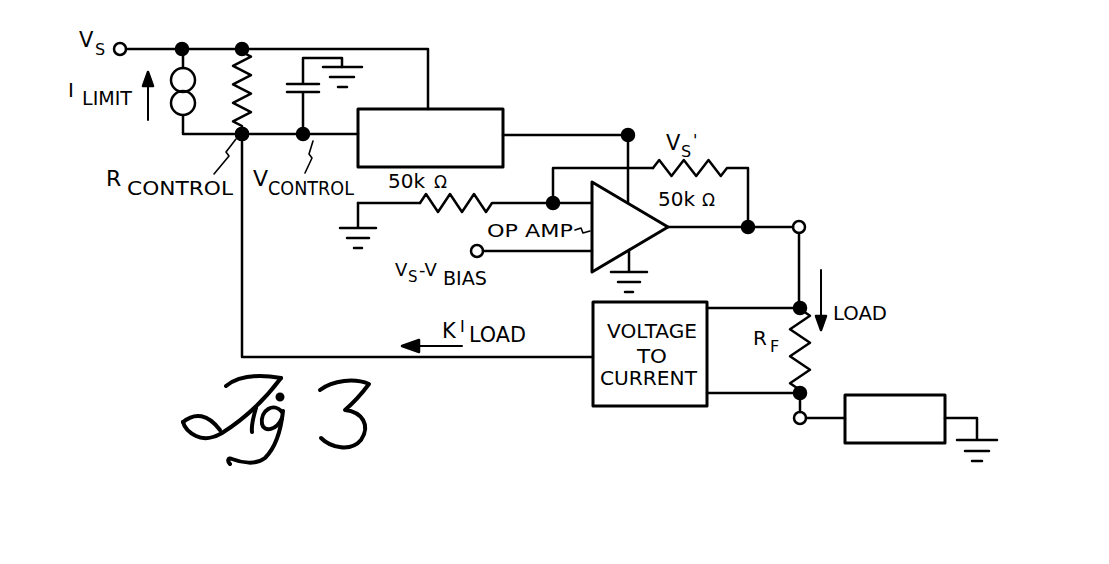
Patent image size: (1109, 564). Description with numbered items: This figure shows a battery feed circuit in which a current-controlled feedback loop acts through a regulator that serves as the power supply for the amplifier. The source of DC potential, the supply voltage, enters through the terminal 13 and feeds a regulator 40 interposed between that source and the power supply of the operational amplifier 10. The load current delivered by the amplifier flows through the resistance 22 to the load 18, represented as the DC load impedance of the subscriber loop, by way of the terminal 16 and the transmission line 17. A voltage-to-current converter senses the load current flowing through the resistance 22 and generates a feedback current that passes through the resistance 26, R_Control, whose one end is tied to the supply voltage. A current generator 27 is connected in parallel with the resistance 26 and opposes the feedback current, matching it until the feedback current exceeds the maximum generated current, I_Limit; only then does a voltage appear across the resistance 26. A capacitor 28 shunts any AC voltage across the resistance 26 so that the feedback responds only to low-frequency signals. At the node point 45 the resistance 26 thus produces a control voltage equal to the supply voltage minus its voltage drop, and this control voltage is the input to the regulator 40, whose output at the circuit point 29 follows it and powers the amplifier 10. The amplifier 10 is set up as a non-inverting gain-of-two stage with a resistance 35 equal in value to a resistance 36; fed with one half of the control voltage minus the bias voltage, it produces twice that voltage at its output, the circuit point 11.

The terminal 13 is at (125, 42).
The current generator 27 is at (172, 117).
The resistance 26 is at (246, 98).
The node point 45 is at (247, 132).
The capacitor 28 is at (319, 96).
The regulator 40 is at (437, 108).
The circuit point 29 is at (632, 112).
The resistance 36 is at (484, 201).
The resistance 35 is at (713, 163).
The operational amplifier 10 is at (655, 237).
The circuit point 11 is at (805, 222).
The resistance 22 is at (806, 357).
The terminal 16 is at (794, 422).
The transmission line 17 is at (820, 423).
The element 18 is at (895, 394).